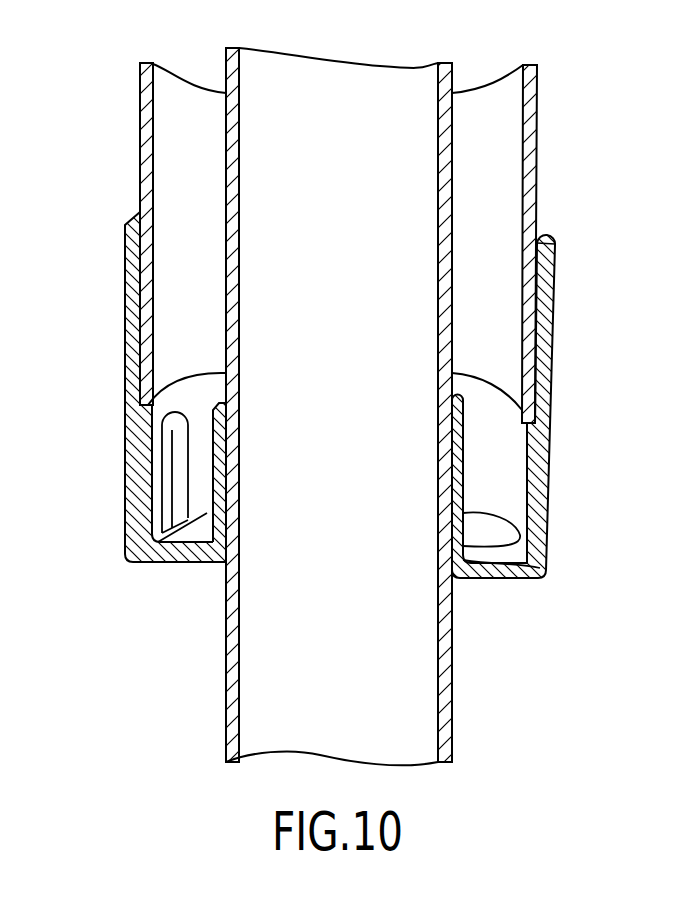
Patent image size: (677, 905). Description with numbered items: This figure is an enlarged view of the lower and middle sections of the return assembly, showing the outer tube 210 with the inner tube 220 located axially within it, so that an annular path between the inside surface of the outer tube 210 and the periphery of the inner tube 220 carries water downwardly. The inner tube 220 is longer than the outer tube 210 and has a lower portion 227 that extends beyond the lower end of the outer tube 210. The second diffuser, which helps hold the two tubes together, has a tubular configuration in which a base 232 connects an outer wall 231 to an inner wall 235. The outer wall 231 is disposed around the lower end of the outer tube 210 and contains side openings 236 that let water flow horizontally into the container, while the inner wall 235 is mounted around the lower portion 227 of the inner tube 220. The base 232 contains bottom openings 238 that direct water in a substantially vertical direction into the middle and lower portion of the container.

The outer tube 210 is at (537, 95).
The inner tube 220 is at (452, 762).
The lower portion of the inner tube 227 is at (238, 502).
The outer wall 231 is at (125, 273).
The base 232 is at (540, 577).
The inner wall 235 is at (225, 457).
The side openings 236 is at (178, 468).
The bottom openings 238 is at (503, 567).